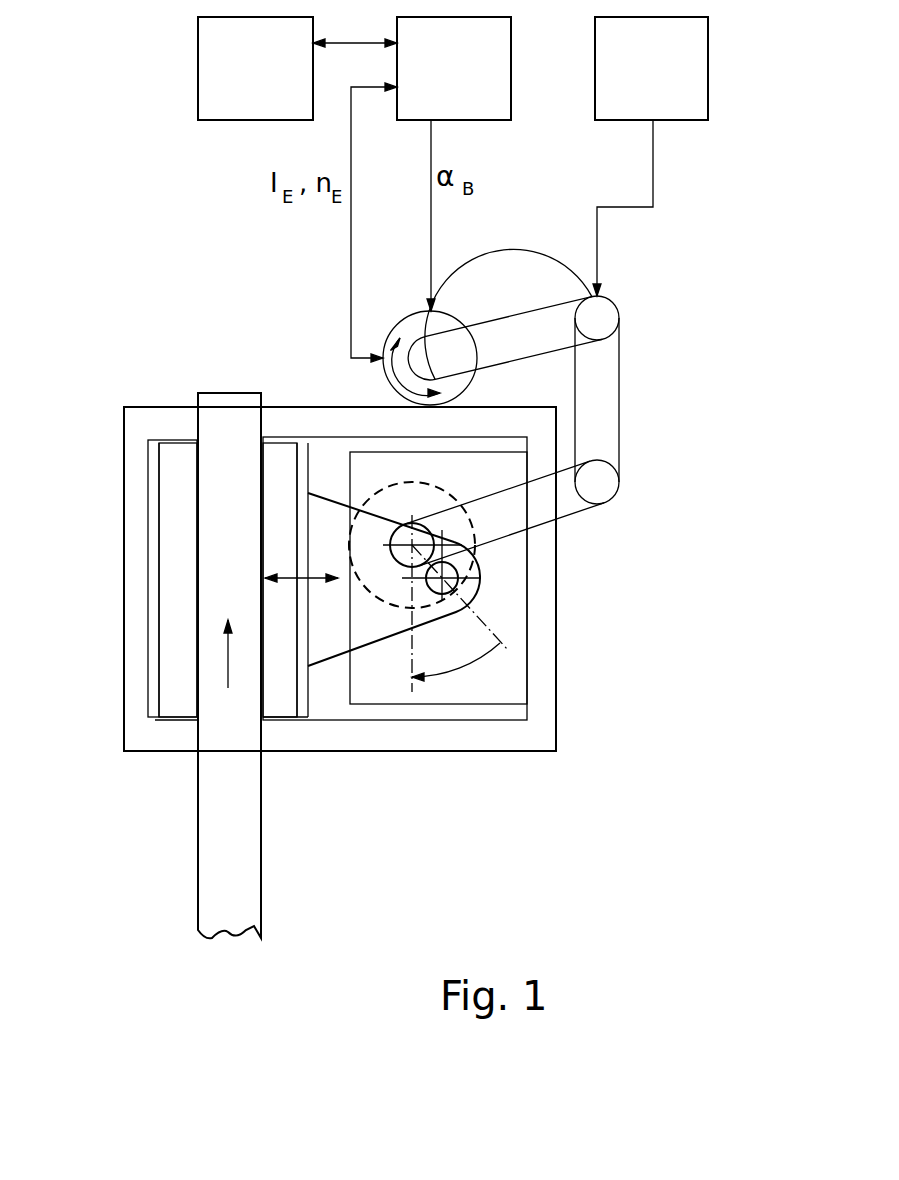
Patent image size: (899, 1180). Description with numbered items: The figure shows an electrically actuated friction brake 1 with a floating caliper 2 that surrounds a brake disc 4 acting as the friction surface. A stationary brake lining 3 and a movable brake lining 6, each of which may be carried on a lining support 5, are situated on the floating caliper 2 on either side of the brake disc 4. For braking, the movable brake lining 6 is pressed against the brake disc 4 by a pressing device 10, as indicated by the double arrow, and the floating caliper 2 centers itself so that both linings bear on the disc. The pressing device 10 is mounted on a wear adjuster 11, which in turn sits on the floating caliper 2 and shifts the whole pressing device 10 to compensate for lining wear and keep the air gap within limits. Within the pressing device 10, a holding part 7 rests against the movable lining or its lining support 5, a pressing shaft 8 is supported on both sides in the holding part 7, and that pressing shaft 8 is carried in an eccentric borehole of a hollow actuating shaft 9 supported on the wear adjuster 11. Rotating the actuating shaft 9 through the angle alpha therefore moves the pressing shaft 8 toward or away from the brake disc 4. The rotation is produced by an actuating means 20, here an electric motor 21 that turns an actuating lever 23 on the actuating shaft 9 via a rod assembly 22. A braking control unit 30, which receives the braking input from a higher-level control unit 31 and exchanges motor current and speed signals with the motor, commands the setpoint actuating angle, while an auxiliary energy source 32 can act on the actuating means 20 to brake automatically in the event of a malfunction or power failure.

The friction brake 1 is at (222, 348).
The floating caliper 2 is at (540, 714).
The stationary brake lining 3 is at (177, 625).
The brake disc 4 is at (228, 828).
The lining support 5 is at (153, 455).
The movable brake lining 6 is at (283, 473).
The holding part 7 is at (332, 525).
The pressing shaft 8 is at (473, 590).
The actuating shaft 9 is at (472, 556).
The pressing device 10 is at (470, 487).
The wear adjuster 11 is at (483, 683).
The actuating means 20 is at (525, 308).
The electric motor 21 is at (418, 327).
The rod assembly 22 is at (633, 360).
The actuating lever 23 is at (530, 508).
The braking control unit 30 is at (436, 89).
The higher-level control unit 31 is at (237, 89).
The auxiliary energy source 32 is at (633, 89).